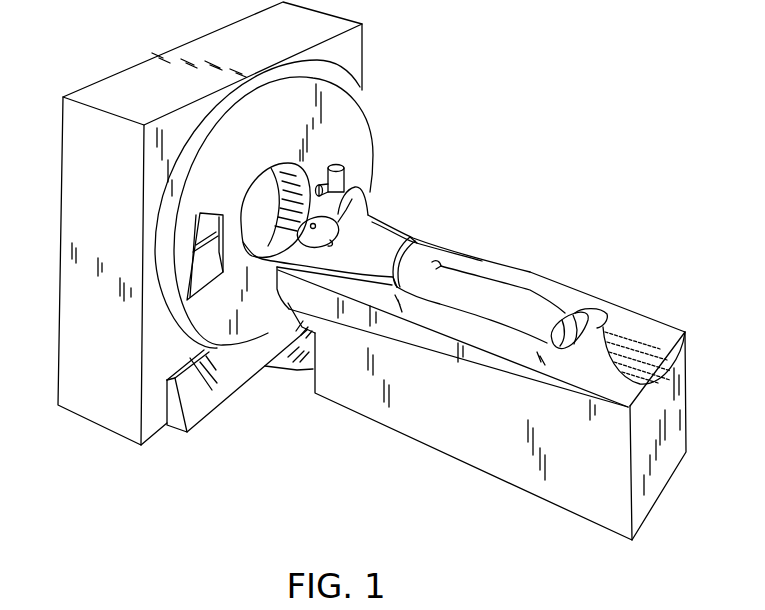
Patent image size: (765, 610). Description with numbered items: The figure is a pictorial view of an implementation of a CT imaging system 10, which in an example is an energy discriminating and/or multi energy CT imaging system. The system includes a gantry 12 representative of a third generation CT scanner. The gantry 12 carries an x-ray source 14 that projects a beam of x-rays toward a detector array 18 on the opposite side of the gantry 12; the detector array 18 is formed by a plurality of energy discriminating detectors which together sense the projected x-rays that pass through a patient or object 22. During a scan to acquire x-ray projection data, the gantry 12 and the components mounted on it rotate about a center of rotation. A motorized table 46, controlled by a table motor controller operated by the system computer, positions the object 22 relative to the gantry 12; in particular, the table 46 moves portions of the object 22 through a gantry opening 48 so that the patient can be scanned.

The CT imaging system 10 is at (284, 223).
The gantry 12 is at (358, 136).
The x-ray source 14 is at (346, 178).
The detector array 18 is at (205, 275).
The patient or object 22 is at (392, 242).
The motorized table 46 is at (468, 453).
The gantry opening 48 is at (259, 188).